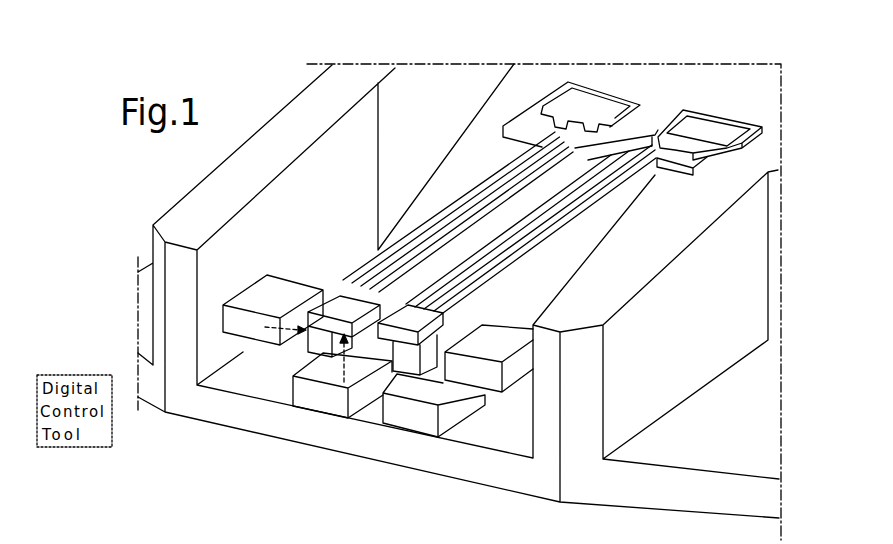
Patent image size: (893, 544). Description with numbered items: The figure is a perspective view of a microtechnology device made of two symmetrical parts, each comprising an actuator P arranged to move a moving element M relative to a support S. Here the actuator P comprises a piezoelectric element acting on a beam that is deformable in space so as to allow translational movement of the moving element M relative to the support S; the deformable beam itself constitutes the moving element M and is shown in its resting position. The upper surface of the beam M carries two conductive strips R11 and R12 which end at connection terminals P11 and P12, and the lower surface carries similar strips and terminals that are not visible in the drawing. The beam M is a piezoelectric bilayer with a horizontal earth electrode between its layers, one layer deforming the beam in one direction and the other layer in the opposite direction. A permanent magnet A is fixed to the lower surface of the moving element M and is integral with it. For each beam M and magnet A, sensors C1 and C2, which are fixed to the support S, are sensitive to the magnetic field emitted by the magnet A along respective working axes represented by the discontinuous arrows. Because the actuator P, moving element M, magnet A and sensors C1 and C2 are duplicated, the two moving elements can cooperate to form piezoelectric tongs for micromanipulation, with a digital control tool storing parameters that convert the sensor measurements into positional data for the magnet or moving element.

The support S is at (463, 463).
The sensor C1 is at (328, 402).
The sensor C2 is at (275, 288).
The moving element M is at (335, 298).
The permanent magnet A is at (323, 340).
The conductive strip R11 is at (453, 217).
The conductive strip R12 is at (502, 190).
The connection terminal P11 is at (558, 103).
The connection terminal P12 is at (603, 100).
The actuator P is at (640, 133).